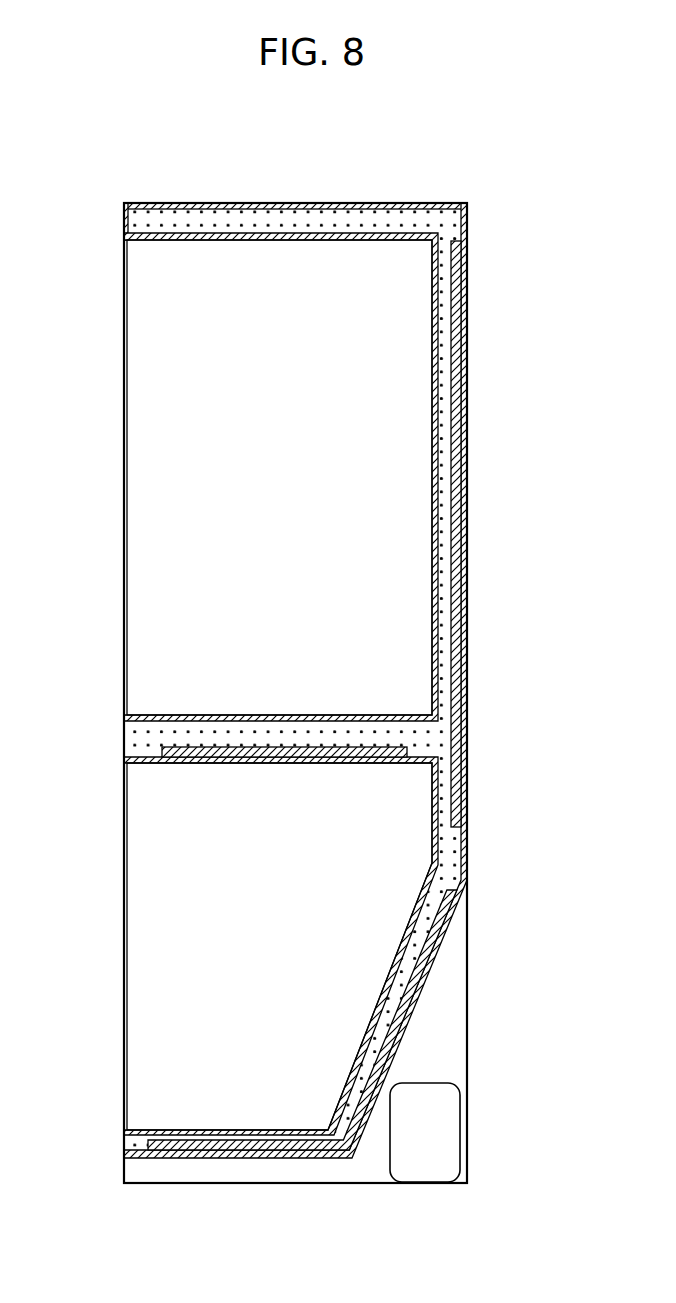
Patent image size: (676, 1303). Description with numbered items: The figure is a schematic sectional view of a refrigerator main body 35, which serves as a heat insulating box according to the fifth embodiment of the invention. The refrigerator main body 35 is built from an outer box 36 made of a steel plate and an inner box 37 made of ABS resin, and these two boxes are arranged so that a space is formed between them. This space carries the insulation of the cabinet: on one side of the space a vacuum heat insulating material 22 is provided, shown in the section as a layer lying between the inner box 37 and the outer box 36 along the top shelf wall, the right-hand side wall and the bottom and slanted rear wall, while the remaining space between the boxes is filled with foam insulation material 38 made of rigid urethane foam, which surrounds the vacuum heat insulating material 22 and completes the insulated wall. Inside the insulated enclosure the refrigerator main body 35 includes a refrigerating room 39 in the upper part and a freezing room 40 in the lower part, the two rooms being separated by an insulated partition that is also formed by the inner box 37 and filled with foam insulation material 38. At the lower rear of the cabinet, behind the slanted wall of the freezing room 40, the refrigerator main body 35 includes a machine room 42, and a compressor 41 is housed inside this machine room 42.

The refrigerator main body 35 is at (272, 191).
The refrigerating room 39 is at (168, 377).
The freezing room 40 is at (182, 868).
The inner box 37 is at (433, 540).
The outer box 36 is at (468, 585).
The foam insulation material 38 is at (438, 742).
The vacuum heat insulating material 22 is at (467, 447).
The machine room 42 is at (447, 1050).
The compressor 41 is at (447, 1128).